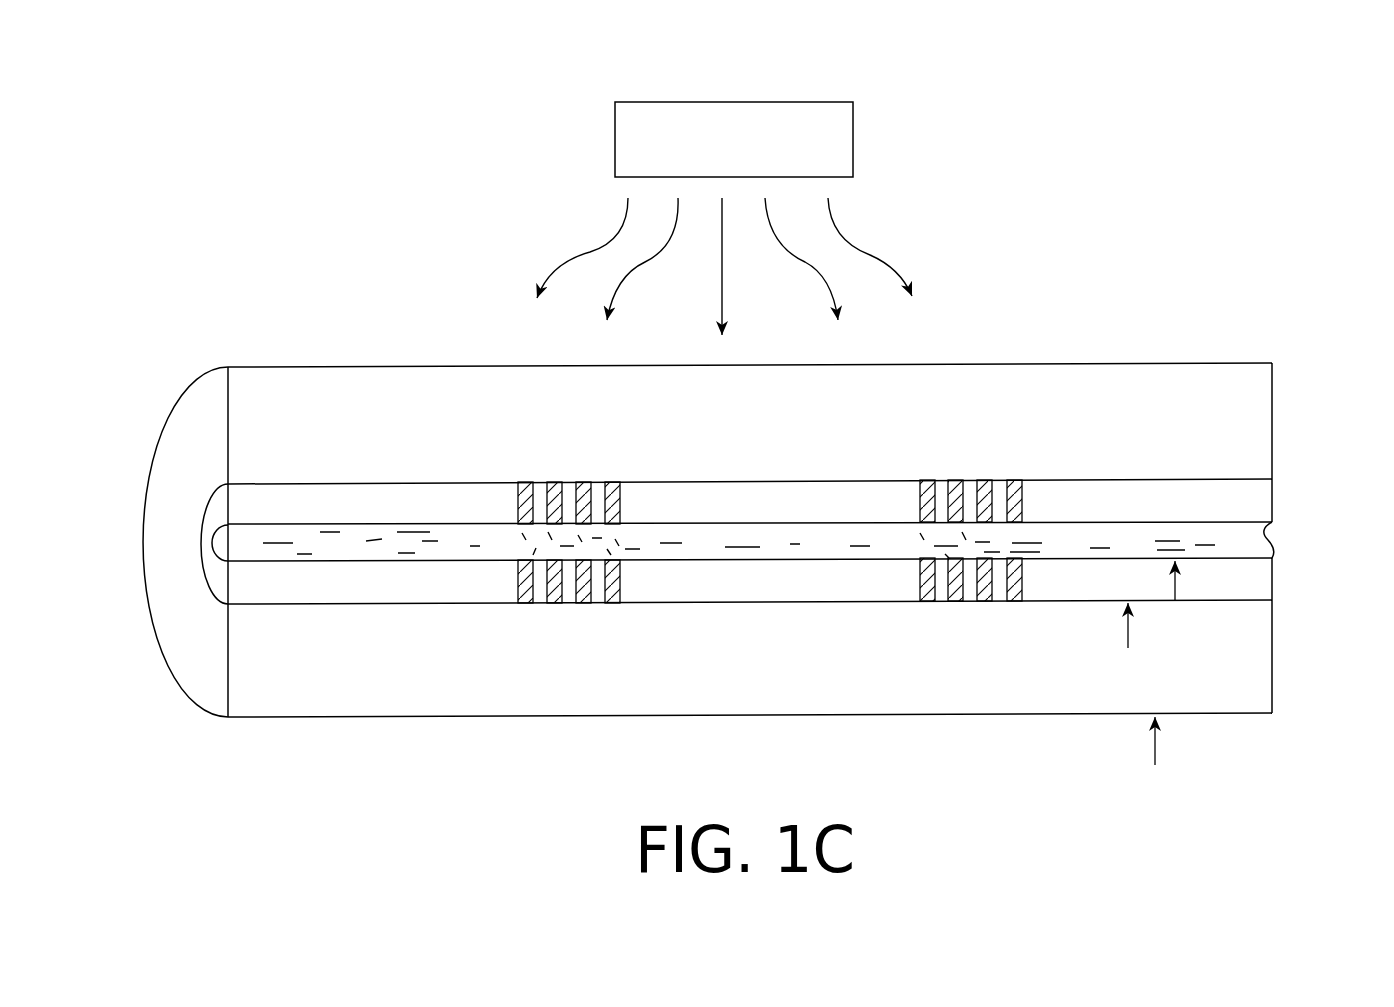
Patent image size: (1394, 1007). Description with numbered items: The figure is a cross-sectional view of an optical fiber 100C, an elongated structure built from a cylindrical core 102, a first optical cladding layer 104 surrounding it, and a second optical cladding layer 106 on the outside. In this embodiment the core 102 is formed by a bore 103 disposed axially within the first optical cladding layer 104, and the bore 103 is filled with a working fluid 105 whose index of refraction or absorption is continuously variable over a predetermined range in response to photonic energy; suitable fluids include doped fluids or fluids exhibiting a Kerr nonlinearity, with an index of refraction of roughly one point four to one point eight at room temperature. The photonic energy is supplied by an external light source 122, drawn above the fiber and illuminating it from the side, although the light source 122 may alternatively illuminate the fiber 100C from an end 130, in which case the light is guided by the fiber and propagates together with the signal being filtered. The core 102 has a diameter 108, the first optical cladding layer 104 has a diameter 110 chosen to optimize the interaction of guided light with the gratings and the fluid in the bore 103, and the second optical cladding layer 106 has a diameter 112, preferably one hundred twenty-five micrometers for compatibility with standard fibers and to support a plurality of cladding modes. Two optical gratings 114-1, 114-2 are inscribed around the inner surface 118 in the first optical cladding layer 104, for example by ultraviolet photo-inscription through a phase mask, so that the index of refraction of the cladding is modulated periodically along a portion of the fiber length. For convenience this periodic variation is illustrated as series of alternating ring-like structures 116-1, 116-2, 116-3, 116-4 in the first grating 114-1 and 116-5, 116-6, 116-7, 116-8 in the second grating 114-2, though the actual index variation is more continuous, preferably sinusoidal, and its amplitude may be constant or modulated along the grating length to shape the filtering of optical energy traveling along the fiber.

The optical fiber 100C is at (146, 289).
The core 102 is at (203, 537).
The bore 103 is at (352, 562).
The first optical cladding layer 104 is at (217, 577).
The working fluid 105 is at (375, 546).
The second optical cladding layer 106 is at (168, 476).
The diameter 108 is at (1175, 520).
The diameter 110 is at (1127, 477).
The diameter 112 is at (1155, 360).
The optical grating 114-1 is at (577, 532).
The optical grating 114-2 is at (973, 535).
The ring-like structure 116-1 is at (528, 481).
The ring-like structure 116-2 is at (557, 481).
The ring-like structure 116-3 is at (583, 481).
The ring-like structure 116-4 is at (610, 481).
The ring-like structure 116-5 is at (928, 479).
The ring-like structure 116-6 is at (955, 479).
The ring-like structure 116-7 is at (985, 479).
The ring-like structure 116-8 is at (1012, 479).
The inner surface 118 is at (1283, 537).
The external light source 122 is at (716, 164).
The end 130 is at (148, 650).